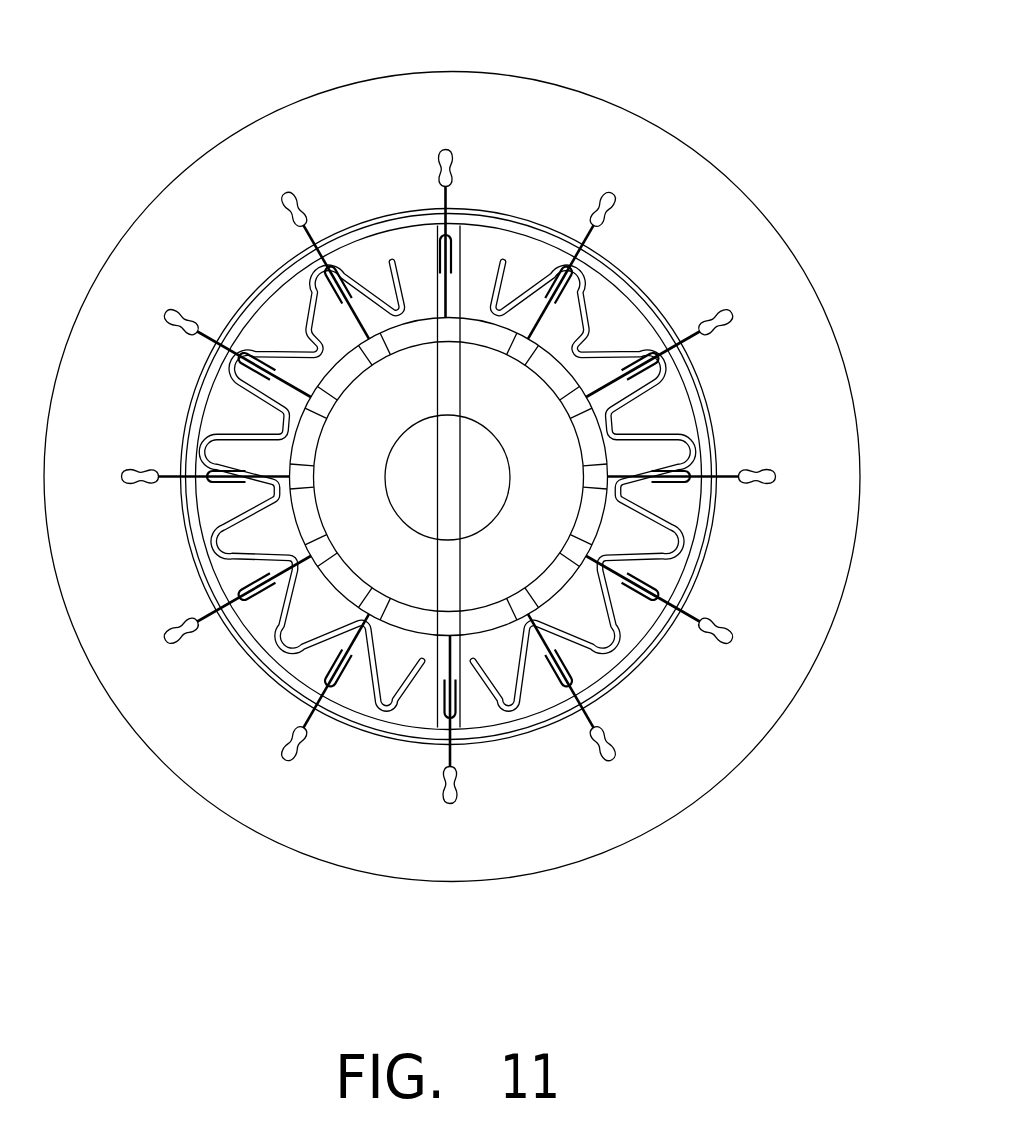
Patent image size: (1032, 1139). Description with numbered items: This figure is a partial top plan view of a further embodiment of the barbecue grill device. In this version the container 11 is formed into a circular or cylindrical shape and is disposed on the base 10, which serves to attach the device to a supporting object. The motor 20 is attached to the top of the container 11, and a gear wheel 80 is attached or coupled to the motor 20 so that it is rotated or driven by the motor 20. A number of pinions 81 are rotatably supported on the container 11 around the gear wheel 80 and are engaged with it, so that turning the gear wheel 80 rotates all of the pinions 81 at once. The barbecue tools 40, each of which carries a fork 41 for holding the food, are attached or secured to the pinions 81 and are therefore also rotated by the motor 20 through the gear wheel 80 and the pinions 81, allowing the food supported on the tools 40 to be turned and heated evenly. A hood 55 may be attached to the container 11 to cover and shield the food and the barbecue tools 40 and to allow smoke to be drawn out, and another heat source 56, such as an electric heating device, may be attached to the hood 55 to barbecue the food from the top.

The base 10 is at (520, 92).
The container 11 is at (532, 730).
The motor 20 is at (485, 496).
The barbecue tools 40 is at (284, 786).
The fork 41 is at (343, 690).
The hood 55 is at (623, 316).
The heat source 56 is at (696, 430).
The gear wheel 80 is at (530, 555).
The pinions 81 is at (360, 600).